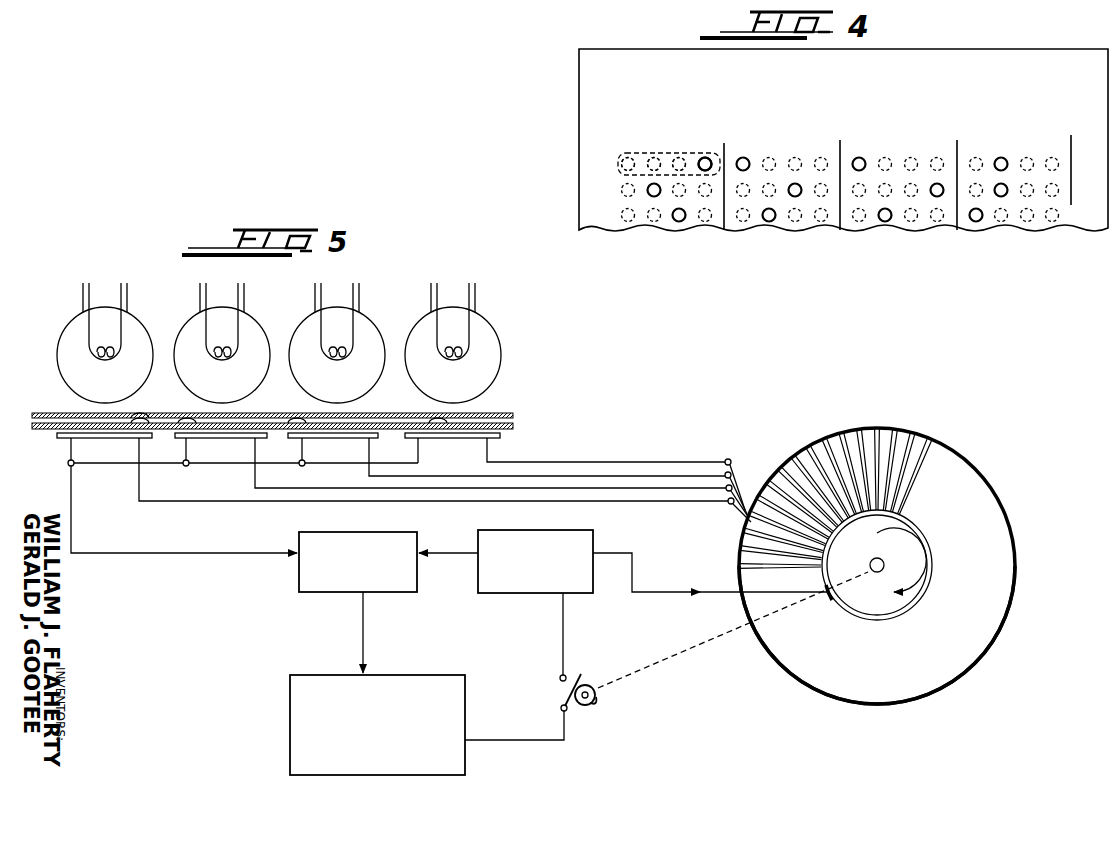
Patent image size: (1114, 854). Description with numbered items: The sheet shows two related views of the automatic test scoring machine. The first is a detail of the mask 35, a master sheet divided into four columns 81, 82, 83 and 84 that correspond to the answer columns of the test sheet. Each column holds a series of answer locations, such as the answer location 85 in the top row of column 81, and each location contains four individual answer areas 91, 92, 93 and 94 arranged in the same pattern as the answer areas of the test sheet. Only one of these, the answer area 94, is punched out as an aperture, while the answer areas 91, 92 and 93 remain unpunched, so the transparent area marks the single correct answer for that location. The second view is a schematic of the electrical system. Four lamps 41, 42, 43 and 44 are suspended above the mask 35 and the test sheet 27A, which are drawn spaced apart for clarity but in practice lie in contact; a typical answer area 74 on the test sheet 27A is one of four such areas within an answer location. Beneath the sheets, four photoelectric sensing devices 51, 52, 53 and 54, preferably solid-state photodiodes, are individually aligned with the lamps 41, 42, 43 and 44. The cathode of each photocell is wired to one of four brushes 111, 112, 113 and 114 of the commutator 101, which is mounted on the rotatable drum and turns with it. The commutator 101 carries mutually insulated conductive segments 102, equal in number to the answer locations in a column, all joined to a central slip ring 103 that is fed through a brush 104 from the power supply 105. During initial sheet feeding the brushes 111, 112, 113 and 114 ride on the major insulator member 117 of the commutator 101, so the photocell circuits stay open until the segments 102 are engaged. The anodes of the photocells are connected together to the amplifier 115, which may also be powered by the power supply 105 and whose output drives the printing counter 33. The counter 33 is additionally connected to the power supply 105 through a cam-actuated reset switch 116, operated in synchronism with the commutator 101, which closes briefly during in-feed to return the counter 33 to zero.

In FIG. 4, the mask 35 is at (1058, 60).
In FIG. 5, the mask 35 is at (503, 412).
In FIG. 4, the column 81 is at (678, 132).
In FIG. 4, the column 82 is at (797, 138).
In FIG. 4, the column 83 is at (903, 143).
In FIG. 4, the column 84 is at (1027, 143).
In FIG. 4, the answer location 85 is at (620, 155).
In FIG. 4, the answer area 91 is at (628, 158).
In FIG. 4, the answer area 92 is at (655, 158).
In FIG. 4, the answer area 93 is at (681, 158).
In FIG. 4, the answer area 94 is at (709, 160).
In FIG. 5, the answer area 94 is at (140, 420).
In FIG. 5, the lamp 41 is at (58, 334).
In FIG. 5, the lamp 42 is at (185, 323).
In FIG. 5, the lamp 43 is at (368, 320).
In FIG. 5, the lamp 44 is at (492, 330).
In FIG. 5, the test sheet 27A is at (513, 428).
In FIG. 5, the answer area 74 is at (148, 427).
In FIG. 5, the photoelectric sensing device 51 is at (62, 440).
In FIG. 5, the photoelectric sensing device 52 is at (247, 440).
In FIG. 5, the photoelectric sensing device 53 is at (360, 440).
In FIG. 5, the photoelectric sensing device 54 is at (457, 440).
In FIG. 5, the brush 111 is at (737, 513).
In FIG. 5, the brush 112 is at (735, 506).
In FIG. 5, the brush 113 is at (743, 492).
In FIG. 5, the brush 114 is at (739, 480).
In FIG. 5, the amplifier 115 is at (338, 594).
In FIG. 5, the power supply 105 is at (582, 585).
In FIG. 5, the printing counter 33 is at (425, 675).
In FIG. 5, the cam-actuated reset switch 116 is at (582, 707).
In FIG. 5, the commutator 101 is at (946, 471).
In FIG. 5, the conductive segments 102 is at (927, 458).
In FIG. 5, the slip ring 103 is at (933, 581).
In FIG. 5, the brush 104 is at (828, 598).
In FIG. 5, the major insulator member 117 is at (882, 685).